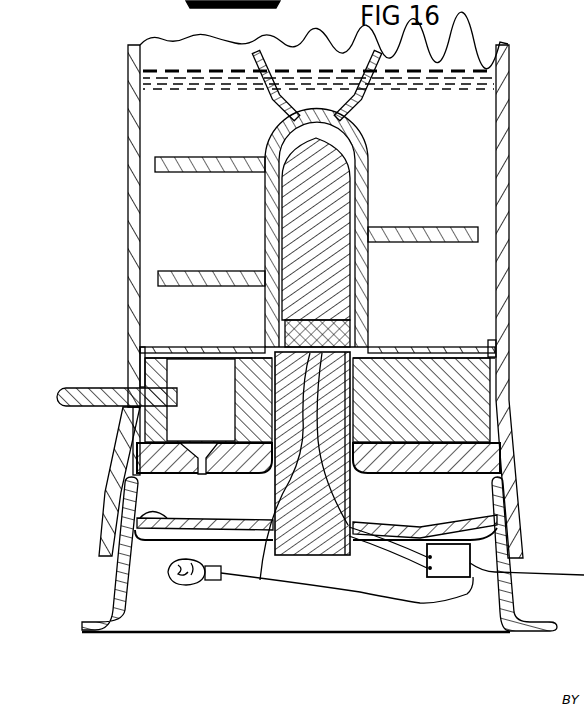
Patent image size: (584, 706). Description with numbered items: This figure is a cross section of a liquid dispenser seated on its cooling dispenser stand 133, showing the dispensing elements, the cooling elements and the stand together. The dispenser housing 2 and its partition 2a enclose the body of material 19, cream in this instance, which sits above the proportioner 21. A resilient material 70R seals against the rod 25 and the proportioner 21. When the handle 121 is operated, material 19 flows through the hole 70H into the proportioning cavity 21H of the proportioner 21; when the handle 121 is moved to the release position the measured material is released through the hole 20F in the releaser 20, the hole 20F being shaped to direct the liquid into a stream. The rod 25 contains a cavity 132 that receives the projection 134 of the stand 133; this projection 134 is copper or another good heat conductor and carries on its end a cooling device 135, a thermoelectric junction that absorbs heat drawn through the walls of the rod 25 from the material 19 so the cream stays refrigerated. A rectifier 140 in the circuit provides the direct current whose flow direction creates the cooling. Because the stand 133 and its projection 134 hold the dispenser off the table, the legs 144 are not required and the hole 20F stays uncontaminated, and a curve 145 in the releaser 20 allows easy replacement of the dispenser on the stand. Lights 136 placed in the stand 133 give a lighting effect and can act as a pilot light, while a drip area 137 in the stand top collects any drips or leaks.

The housing wall 2 is at (127, 182).
The housing partition plate 2a is at (137, 357).
The material 19 is at (493, 98).
The releaser 20 is at (120, 446).
The hole 20F is at (202, 474).
The proportioner 21 is at (137, 378).
The proportioning cavity 21H is at (133, 428).
The rod 25 is at (265, 155).
The hole 70H is at (450, 352).
The resilient material 70R is at (478, 348).
The handle 121 is at (95, 406).
The cavity 132 is at (345, 153).
The stand 133 is at (112, 610).
The projection 134 is at (338, 279).
The cooling device 135 is at (349, 338).
The lights 136 is at (188, 586).
The drip area 137 is at (106, 548).
The rectifier 140 is at (452, 580).
The legs 144 is at (106, 503).
The curve 145 is at (260, 580).